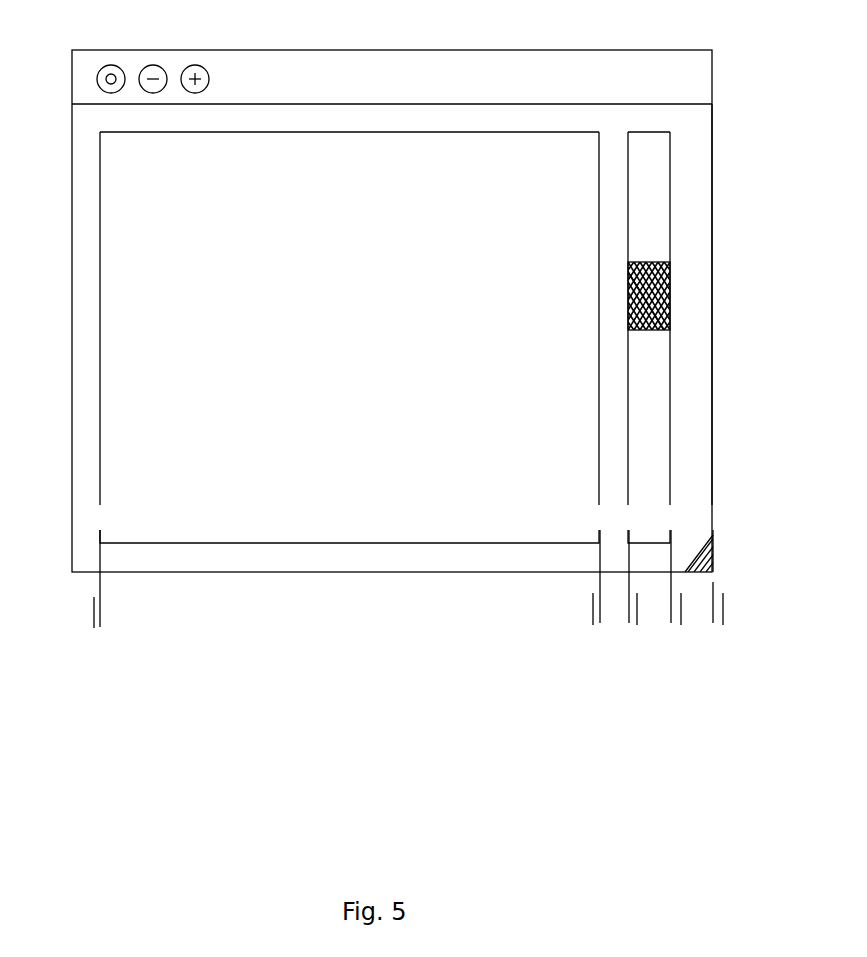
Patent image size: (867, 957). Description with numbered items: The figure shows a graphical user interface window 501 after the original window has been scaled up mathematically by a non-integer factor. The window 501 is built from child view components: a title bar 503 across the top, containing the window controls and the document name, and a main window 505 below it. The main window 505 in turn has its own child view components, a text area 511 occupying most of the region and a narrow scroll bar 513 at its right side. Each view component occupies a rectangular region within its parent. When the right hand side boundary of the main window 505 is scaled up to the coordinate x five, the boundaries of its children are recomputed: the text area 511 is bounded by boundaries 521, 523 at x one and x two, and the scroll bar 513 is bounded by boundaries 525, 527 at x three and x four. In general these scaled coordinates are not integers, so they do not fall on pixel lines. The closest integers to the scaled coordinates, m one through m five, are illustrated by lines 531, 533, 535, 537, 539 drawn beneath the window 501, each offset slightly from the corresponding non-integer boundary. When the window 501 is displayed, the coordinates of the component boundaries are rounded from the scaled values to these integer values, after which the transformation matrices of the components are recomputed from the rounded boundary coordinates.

The window 501 is at (72, 105).
The title bar 503 is at (657, 50).
The main window 505 is at (713, 425).
The text area 511 is at (575, 132).
The scroll bar 513 is at (650, 132).
The boundary 521 is at (100, 283).
The boundary 523 is at (599, 262).
The boundary 525 is at (628, 452).
The boundary 527 is at (671, 367).
The line 531 is at (94, 628).
The line 533 is at (593, 625).
The line 535 is at (637, 625).
The line 537 is at (681, 625).
The line 539 is at (723, 625).